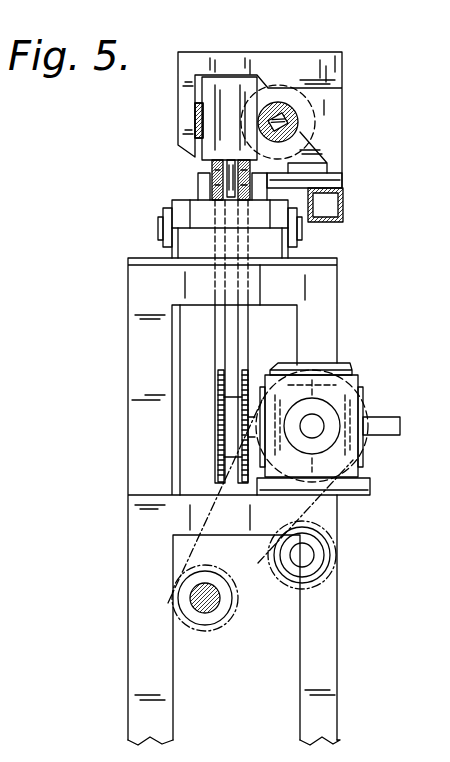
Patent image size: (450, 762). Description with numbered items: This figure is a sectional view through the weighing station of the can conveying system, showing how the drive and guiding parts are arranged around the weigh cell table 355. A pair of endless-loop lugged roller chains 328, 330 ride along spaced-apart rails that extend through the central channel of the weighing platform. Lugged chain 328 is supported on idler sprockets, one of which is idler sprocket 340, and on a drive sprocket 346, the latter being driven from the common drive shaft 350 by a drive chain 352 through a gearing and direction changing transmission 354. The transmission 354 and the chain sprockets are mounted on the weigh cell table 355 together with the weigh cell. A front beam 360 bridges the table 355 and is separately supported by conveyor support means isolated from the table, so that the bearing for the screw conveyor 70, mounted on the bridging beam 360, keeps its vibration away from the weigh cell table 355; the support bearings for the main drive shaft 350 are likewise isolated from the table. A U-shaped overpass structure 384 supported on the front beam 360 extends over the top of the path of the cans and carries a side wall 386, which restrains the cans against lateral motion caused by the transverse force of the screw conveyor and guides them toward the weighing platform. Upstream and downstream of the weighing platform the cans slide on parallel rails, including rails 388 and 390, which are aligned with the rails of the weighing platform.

The screw conveyor 70 is at (313, 122).
The lugged roller chain 328 is at (217, 340).
The lugged roller chain 330 is at (250, 331).
The idler sprocket 340 is at (210, 248).
The drive sprocket 346 is at (220, 396).
The common drive shaft 350 is at (208, 612).
The drive chain 352 is at (313, 494).
The gearing and direction changing transmission 354 is at (355, 378).
The weigh cell table 355 is at (123, 569).
The front beam 360 is at (343, 205).
The U-shaped overpass structure 384 is at (307, 60).
The side wall 386 is at (195, 115).
The rail 388 is at (203, 180).
The rail 390 is at (285, 181).